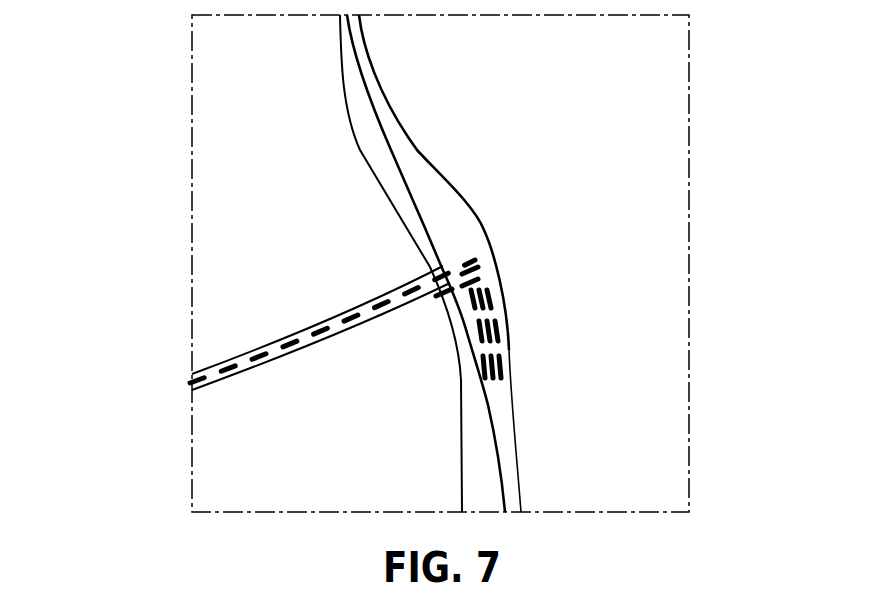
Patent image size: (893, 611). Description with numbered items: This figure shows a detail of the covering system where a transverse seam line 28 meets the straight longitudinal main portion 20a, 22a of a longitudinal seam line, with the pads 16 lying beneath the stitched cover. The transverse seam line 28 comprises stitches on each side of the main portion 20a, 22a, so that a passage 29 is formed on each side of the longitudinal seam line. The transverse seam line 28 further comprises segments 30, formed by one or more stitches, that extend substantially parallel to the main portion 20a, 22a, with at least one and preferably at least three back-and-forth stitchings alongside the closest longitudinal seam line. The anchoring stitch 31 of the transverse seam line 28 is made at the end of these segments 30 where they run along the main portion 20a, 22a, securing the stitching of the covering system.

The pads 16 is at (252, 262).
The longitudinal main portion 20a is at (253, 263).
The longitudinal main portion 22a is at (358, 100).
The transverse seam line 28 is at (225, 370).
The passage 29 is at (426, 224).
The segments 30 is at (492, 348).
The anchoring stitch 31 is at (498, 390).